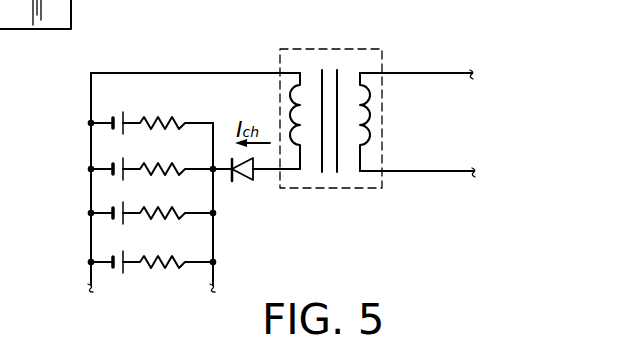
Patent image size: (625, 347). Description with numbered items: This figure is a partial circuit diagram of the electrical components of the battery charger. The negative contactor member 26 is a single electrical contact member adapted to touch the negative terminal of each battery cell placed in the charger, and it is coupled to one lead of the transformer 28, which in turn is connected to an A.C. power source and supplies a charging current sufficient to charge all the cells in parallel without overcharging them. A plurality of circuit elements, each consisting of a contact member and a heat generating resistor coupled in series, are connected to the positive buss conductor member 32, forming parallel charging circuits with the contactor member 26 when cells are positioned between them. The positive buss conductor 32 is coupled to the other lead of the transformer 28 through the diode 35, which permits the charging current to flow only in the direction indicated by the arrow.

The negative contactor member 26 is at (80, 80).
The transformer 28 is at (360, 48).
The positive buss conductor member 32 is at (222, 118).
The diode 35 is at (244, 183).